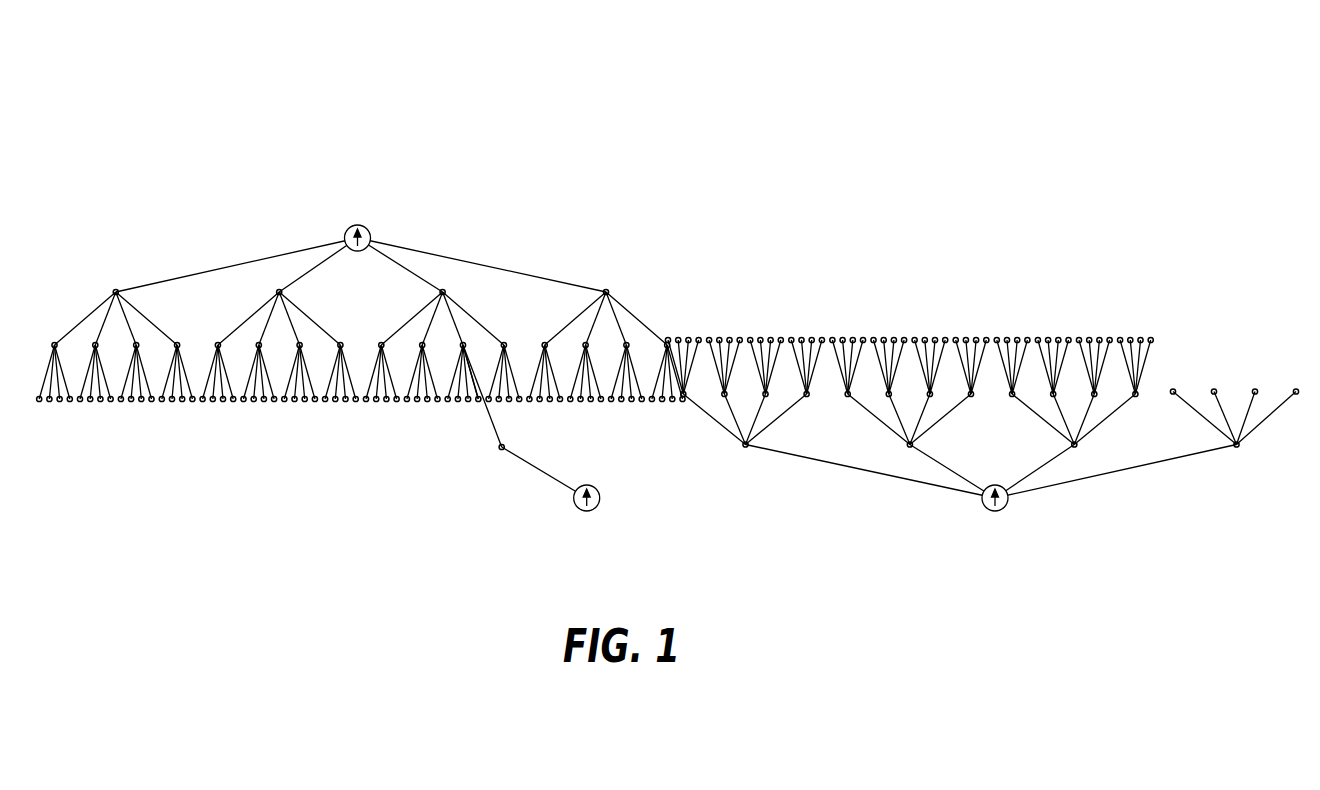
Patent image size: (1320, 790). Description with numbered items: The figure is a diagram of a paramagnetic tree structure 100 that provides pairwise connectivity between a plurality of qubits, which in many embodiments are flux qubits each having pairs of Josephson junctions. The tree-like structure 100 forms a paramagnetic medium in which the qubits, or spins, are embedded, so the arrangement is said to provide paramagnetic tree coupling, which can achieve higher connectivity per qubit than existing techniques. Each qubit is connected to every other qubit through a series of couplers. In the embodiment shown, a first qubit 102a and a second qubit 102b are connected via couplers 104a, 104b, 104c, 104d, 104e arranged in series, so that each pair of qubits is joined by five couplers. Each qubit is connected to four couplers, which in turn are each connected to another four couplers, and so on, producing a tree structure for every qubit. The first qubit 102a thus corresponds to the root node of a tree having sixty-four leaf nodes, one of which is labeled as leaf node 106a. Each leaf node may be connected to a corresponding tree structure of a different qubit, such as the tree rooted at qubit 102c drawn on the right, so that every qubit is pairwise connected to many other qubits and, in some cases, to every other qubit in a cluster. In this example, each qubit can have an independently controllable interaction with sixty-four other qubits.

The structure 100 is at (182, 130).
The first qubit 102a is at (358, 225).
The second qubit 102b is at (577, 509).
The qubit 102c is at (985, 509).
The coupler 104a is at (399, 266).
The coupler 104b is at (455, 311).
The coupler 104c is at (474, 362).
The coupler 104d is at (490, 424).
The coupler 104e is at (536, 470).
The leaf node 106a is at (683, 397).